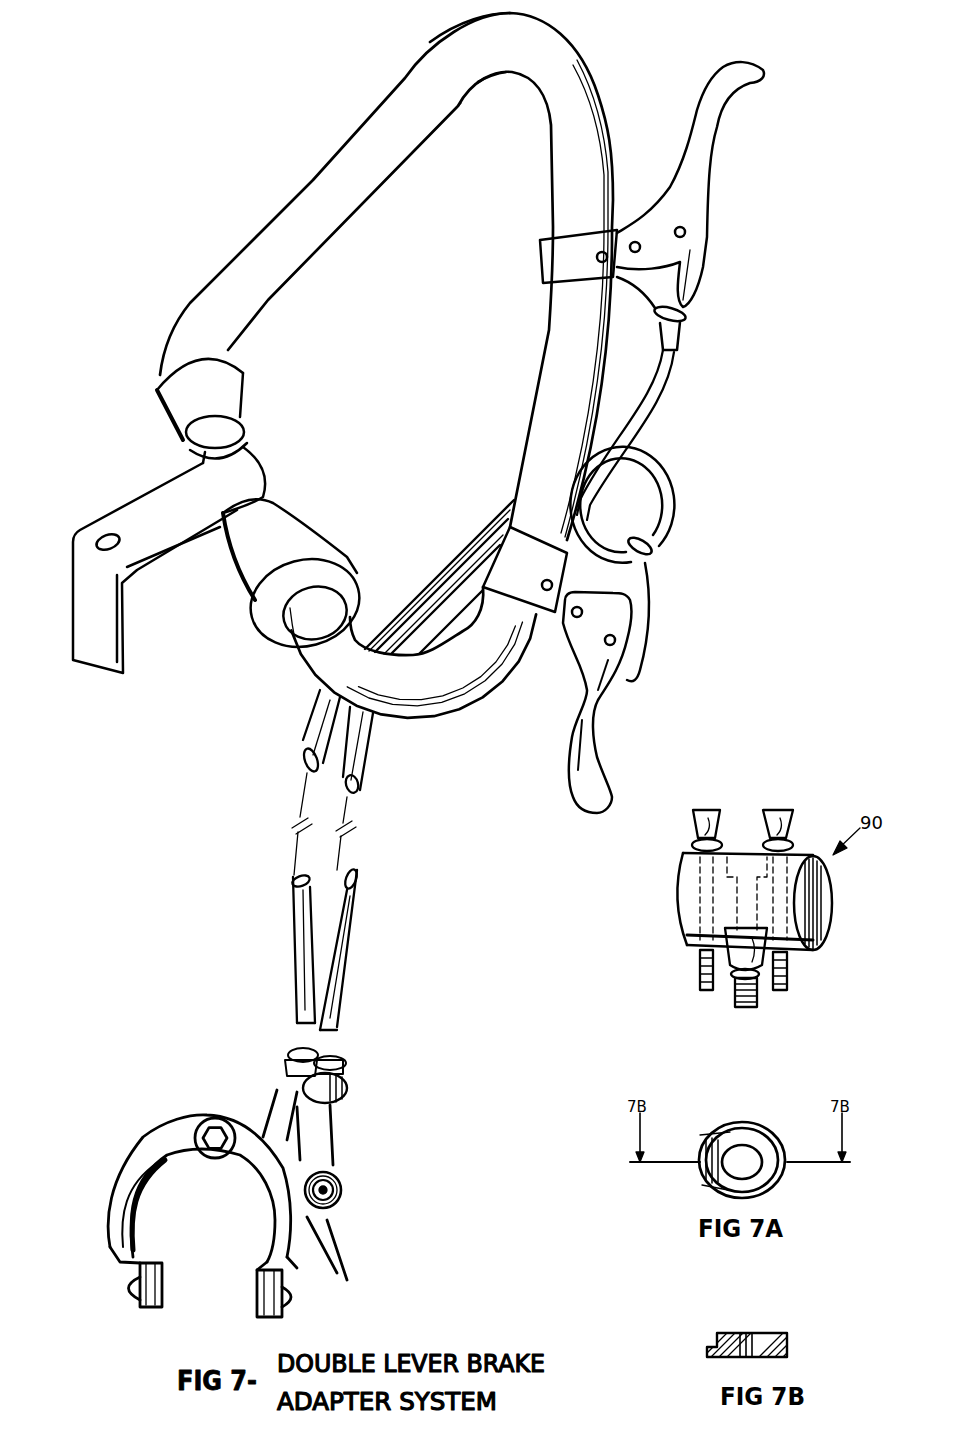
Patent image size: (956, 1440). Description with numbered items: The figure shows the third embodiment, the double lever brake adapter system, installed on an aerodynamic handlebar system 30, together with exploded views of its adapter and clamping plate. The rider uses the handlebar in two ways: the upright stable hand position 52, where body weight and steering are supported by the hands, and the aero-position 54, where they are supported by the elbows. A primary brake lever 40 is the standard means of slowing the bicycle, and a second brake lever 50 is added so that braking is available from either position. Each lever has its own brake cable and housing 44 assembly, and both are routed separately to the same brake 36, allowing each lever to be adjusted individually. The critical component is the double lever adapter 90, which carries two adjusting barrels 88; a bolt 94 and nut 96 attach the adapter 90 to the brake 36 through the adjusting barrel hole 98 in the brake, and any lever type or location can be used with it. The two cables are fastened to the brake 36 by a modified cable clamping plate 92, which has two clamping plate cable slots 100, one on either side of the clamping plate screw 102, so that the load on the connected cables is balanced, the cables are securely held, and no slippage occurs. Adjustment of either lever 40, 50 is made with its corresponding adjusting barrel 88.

In FIG. 7, the aerodynamic handlebar system 30 is at (288, 127).
In FIG. 7, the brake 36 is at (149, 1113).
In FIG. 7, the primary brake lever 40 is at (625, 603).
In FIG. 7, the housing 44 is at (292, 902).
In FIG. 7, the brake lever 50 is at (690, 258).
In FIG. 7, the upright stable hand position 52 is at (233, 298).
In FIG. 7, the aero-position 54 is at (570, 123).
In FIG. 7, the adjusting barrel 88 is at (783, 810).
In FIG. 7, the double lever adapter 90 is at (335, 1093).
In FIG. 7, the modified cable clamping plate 92 is at (337, 1210).
In FIG. 7A, the modified cable clamping plate 92 is at (790, 1170).
In FIG. 7B, the modified cable clamping plate 92 is at (765, 1322).
In FIG. 7, the bolt 94 is at (753, 1003).
In FIG. 7, the nut 96 is at (733, 974).
In FIG. 7, the adjusting barrel hole 98 is at (750, 925).
In FIG. 7B, the clamping plate cable slot 100 is at (770, 1334).
In FIG. 7, the clamping plate screw 102 is at (334, 1190).